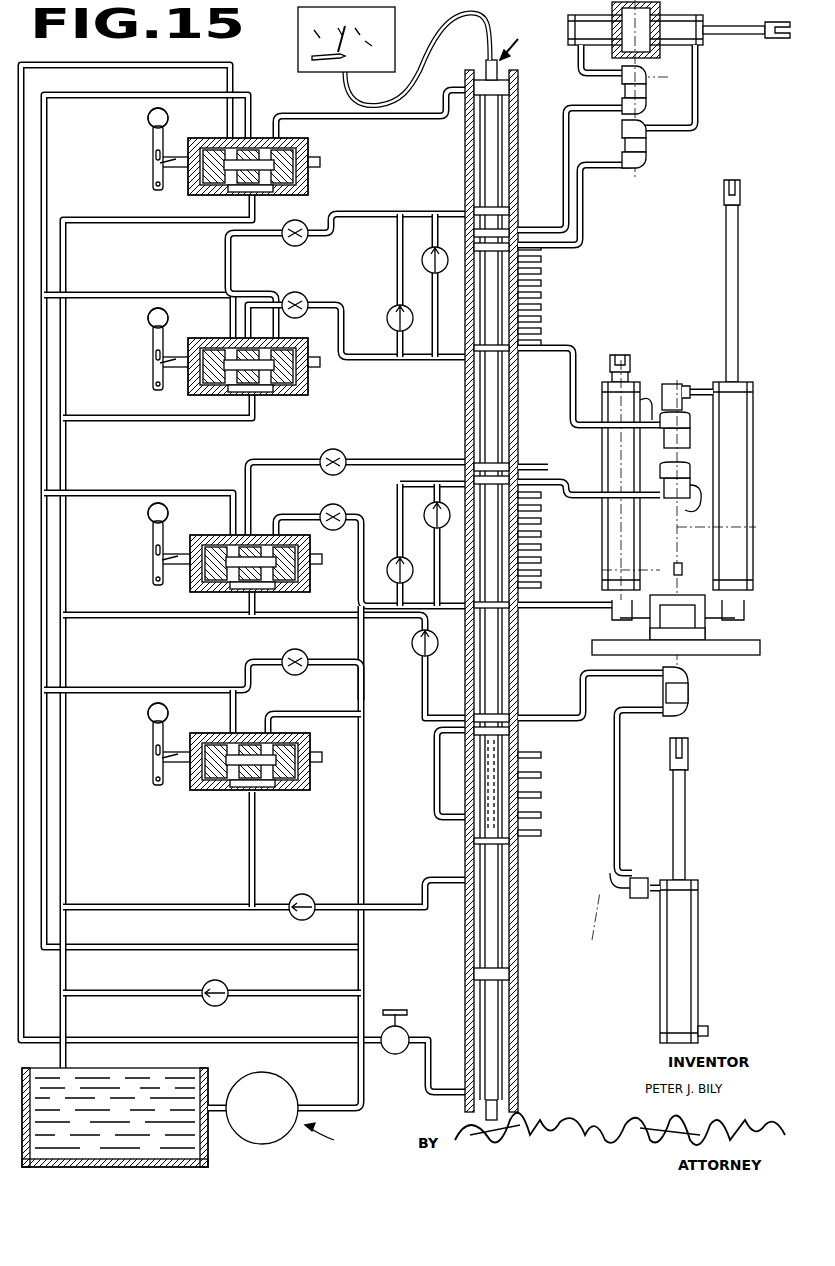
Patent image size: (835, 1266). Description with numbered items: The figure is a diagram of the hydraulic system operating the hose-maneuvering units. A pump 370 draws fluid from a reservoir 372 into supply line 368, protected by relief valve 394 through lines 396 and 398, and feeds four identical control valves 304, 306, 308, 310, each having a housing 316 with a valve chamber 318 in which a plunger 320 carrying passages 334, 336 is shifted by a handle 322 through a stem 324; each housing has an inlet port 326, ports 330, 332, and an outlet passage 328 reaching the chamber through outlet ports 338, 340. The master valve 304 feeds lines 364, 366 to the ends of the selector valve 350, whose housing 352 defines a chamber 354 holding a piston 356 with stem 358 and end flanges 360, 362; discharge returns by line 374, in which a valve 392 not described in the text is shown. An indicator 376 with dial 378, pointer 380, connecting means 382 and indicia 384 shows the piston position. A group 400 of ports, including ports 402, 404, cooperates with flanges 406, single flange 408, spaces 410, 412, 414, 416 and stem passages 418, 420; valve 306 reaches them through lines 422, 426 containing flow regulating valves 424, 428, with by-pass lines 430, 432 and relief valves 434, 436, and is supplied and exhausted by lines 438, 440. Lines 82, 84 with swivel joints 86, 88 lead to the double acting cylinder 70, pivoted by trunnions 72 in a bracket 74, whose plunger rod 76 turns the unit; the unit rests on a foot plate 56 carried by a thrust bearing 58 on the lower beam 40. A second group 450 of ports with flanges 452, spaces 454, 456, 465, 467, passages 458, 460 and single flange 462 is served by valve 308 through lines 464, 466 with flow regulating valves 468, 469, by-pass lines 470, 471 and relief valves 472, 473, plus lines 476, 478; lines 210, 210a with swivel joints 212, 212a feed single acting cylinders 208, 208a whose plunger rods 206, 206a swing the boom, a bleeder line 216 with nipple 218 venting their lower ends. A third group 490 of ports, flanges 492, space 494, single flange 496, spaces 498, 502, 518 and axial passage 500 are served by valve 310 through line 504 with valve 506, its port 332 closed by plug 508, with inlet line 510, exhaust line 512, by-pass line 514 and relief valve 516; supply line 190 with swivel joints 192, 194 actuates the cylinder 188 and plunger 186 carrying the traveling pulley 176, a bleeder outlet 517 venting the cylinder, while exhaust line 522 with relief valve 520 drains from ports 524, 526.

The base plate 40 is at (735, 655).
The plate 56 is at (700, 638).
The block 58 is at (690, 611).
The cylinder 70 is at (679, 44).
The tee fitting 72 is at (625, 34).
The fitting 74 is at (648, 26).
The piston rod 76 is at (752, 36).
The conduit 82 is at (578, 70).
The conduit 84 is at (700, 95).
The fitting 86 is at (647, 100).
The fitting 88 is at (648, 150).
The clevis 176 is at (688, 748).
The piston rod 186 is at (686, 820).
The cylinder 188 is at (680, 943).
The conduit 190 is at (586, 697).
The elbow fitting 192 is at (690, 695).
The elbow fitting 194 is at (638, 902).
The piston rod 206 is at (738, 304).
The piston rod 206a is at (600, 403).
The cylinder 208 is at (735, 478).
The cylinder 208a is at (608, 542).
The fitting 210 is at (692, 398).
The fitting 210a is at (655, 402).
The fitting 212 is at (610, 404).
The fitting 212a is at (690, 514).
The bracket 216 is at (660, 571).
The bracket 218 is at (690, 571).
The control valve 304 is at (128, 138).
The control valve 306 is at (128, 333).
The control valve 308 is at (128, 533).
The control valve 310 is at (128, 730).
The valve body 316 is at (298, 201).
The valve bore 318 is at (296, 195).
The spool rod 320 is at (320, 167).
The handle 322 is at (152, 152).
The link 324 is at (158, 173).
The valve port 326 is at (250, 133).
The return port 328 is at (246, 205).
The valve port 330 is at (233, 133).
The spool land 332 is at (283, 151).
The lever 334 is at (188, 158).
The spool land 336 is at (278, 153).
The passage 338 is at (230, 197).
The passage 340 is at (260, 197).
The valve section 350 is at (541, 986).
The passage 352 is at (470, 855).
The passage 354 is at (470, 872).
The conduit 356 is at (462, 888).
The valve housing 358 is at (460, 151).
The cap 360 is at (510, 92).
The block 362 is at (510, 975).
The conduit 364 is at (446, 110).
The conduit 366 is at (68, 68).
The conduit 368 is at (98, 96).
The pump 370 is at (282, 1090).
The reservoir 372 is at (205, 1088).
The return conduit 374 is at (66, 219).
The switch contact 376 is at (305, 66).
The control box 378 is at (300, 39).
The pointer 380 is at (335, 66).
The cable 382 is at (425, 95).
The contact arm 384 is at (362, 44).
The shut-off valve 392 is at (395, 1032).
The check valve 394 is at (220, 985).
The conduit 396 is at (312, 981).
The conduit 398 is at (125, 981).
The valve section 400 is at (510, 264).
The port 402 is at (510, 210).
The port 404 is at (512, 233).
The port 406 is at (512, 188).
The port 408 is at (512, 352).
The bore 410 is at (478, 175).
The port 412 is at (470, 213).
The conduit 414 is at (462, 239).
The conduit 416 is at (480, 358).
The port 418 is at (490, 208).
The conduit 420 is at (396, 293).
The conduit 422 is at (229, 255).
The check valve 424 is at (290, 246).
The conduit 426 is at (388, 368).
The check valve 428 is at (288, 296).
The conduit 430 is at (400, 355).
The conduit 432 is at (400, 281).
The check valve 434 is at (422, 262).
The check valve 436 is at (388, 319).
The conduit 438 is at (92, 280).
The conduit 440 is at (150, 422).
The valve section 450 is at (513, 531).
The port 452 is at (505, 457).
The port 454 is at (512, 467).
The port 456 is at (512, 480).
The port 458 is at (488, 466).
The port 460 is at (488, 480).
The port 462 is at (512, 610).
The conduit 464 is at (300, 464).
The conduit 465 is at (475, 416).
The conduit 466 is at (361, 592).
The check valve 467 is at (428, 632).
The check valve 468 is at (340, 455).
The check valve 469 is at (344, 514).
The conduit 470 is at (396, 488).
The check valve 471 is at (433, 531).
The check valve 472 is at (390, 562).
The conduit 473 is at (400, 503).
The conduit 476 is at (100, 481).
The conduit 478 is at (150, 622).
The valve section 490 is at (550, 790).
The port 492 is at (510, 714).
The port 494 is at (512, 721).
The port 496 is at (512, 843).
The conduit 498 is at (470, 846).
The port 500 is at (488, 724).
The port 502 is at (498, 903).
The conduit 504 is at (362, 755).
The check valve 506 is at (300, 655).
The port 508 is at (268, 732).
The conduit 510 is at (164, 678).
The conduit 512 is at (250, 875).
The check valve 514 is at (325, 902).
The conduit 516 is at (296, 896).
The vent 517 is at (740, 1022).
The bore 518 is at (510, 648).
The check valve 520 is at (412, 652).
The conduit 522 is at (330, 620).
The conduit 524 is at (434, 738).
The conduit 526 is at (432, 814).